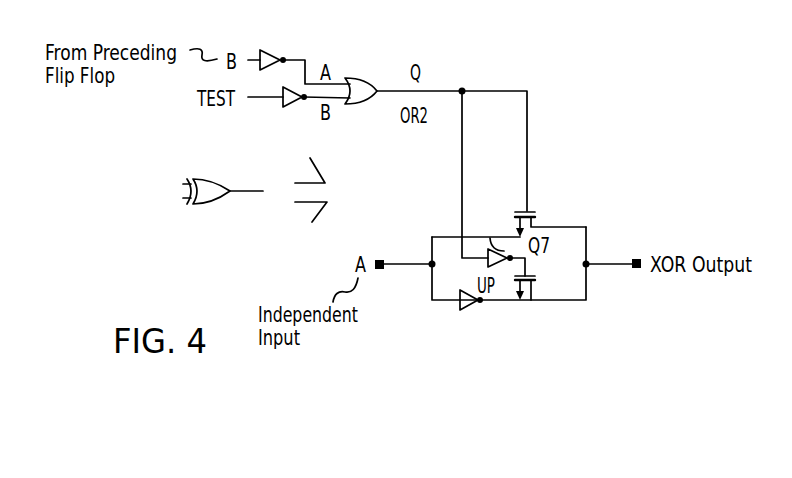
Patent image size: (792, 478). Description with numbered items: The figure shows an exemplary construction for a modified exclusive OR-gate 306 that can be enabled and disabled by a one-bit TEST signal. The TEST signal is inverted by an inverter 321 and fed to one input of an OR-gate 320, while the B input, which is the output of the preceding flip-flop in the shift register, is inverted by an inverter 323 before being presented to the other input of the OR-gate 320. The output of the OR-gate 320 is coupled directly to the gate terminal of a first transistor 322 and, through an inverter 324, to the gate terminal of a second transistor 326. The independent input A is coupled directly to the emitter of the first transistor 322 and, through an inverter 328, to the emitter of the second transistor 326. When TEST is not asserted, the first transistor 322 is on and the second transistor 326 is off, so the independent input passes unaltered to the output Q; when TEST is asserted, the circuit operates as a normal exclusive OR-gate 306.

The exclusive OR-gate 306 is at (410, 177).
The OR-gate 320 is at (352, 76).
The inverter 321 is at (292, 106).
The first transistor 322 is at (533, 207).
The inverter 323 is at (278, 53).
The inverter 324 is at (500, 235).
The second transistor 326 is at (538, 272).
The inverter 328 is at (468, 308).